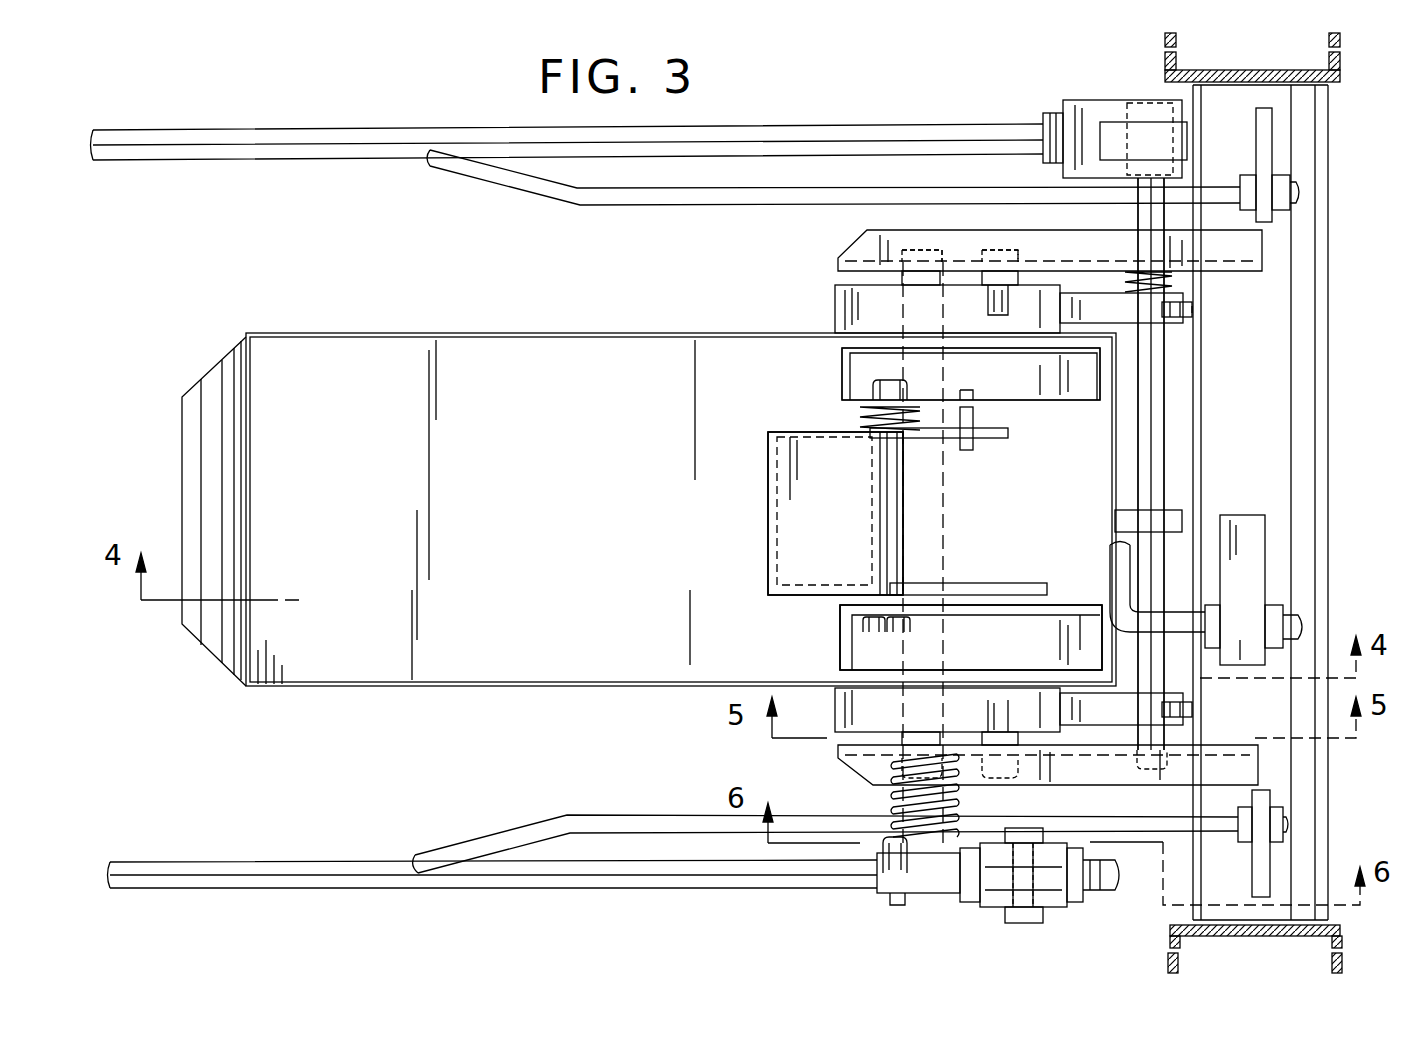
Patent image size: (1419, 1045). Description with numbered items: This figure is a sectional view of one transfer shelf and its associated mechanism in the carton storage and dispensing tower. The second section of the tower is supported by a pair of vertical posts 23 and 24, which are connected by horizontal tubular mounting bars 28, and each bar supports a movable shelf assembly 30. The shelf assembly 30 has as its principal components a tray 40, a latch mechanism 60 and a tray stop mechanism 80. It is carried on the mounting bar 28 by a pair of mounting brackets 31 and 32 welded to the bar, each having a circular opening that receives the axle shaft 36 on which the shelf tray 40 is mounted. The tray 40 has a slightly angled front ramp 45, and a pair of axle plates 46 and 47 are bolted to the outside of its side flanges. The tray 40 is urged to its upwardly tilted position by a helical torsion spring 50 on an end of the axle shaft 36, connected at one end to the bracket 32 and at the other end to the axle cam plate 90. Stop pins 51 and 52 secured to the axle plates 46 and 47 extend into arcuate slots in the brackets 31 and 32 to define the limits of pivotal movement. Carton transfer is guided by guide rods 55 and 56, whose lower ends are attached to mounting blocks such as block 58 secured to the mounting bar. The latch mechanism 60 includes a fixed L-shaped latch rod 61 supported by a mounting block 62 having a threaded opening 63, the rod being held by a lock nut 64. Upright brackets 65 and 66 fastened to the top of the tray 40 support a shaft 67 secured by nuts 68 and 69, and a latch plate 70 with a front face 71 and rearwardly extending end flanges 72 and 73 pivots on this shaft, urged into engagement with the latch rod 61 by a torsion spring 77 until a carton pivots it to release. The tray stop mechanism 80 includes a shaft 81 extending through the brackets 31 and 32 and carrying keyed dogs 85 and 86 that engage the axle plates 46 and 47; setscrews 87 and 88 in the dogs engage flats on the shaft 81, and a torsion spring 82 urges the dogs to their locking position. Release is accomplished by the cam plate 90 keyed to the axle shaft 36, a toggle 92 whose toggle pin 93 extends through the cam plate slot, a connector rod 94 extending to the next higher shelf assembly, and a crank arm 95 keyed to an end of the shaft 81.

The vertical post 23 is at (1170, 930).
The vertical post 24 is at (1165, 62).
The horizontal tubular mounting bar 28 is at (1330, 396).
The movable shelf assembly 30 is at (938, 100).
The mounting bracket 31 is at (1212, 272).
The mounting bracket 32 is at (1258, 765).
The axle shaft 36 is at (957, 803).
The shelf tray 40 is at (371, 322).
The front ramp 45 is at (223, 360).
The axle plate 46 is at (840, 300).
The axle plate 47 is at (858, 710).
The helical torsion spring 50 is at (893, 807).
The stop pin 51 is at (1015, 258).
The stop pin 52 is at (1018, 760).
The guide rod 55 is at (820, 210).
The guide rod 56 is at (612, 815).
The mounting block 58 is at (1255, 862).
The latch mechanism 60 is at (780, 606).
The latch rod 61 is at (1110, 545).
The mounting block 62 is at (1265, 535).
The threaded opening 63 is at (1215, 610).
The lock nut 64 is at (1275, 610).
The upright bracket 65 is at (1085, 408).
The upright bracket 66 is at (1085, 605).
The shaft 67 is at (868, 547).
The nut 68 is at (873, 390).
The nut 69 is at (863, 625).
The latch plate 70 is at (808, 430).
The front face 71 is at (785, 530).
The end flange 72 is at (985, 440).
The end flange 73 is at (1003, 583).
The torsion spring 77 is at (907, 433).
The tray stop mechanism 80 is at (1178, 452).
The shaft 81 is at (1165, 402).
The torsion spring 82 is at (1173, 285).
The dog 85 is at (1123, 332).
The dog 86 is at (1175, 697).
The setscrew 87 is at (1190, 322).
The setscrew 88 is at (1190, 717).
The axle cam plate 90 is at (895, 893).
The toggle 92 is at (995, 895).
The toggle pin 93 is at (1022, 828).
The connector rod 94 is at (275, 862).
The crank arm 95 is at (1127, 130).